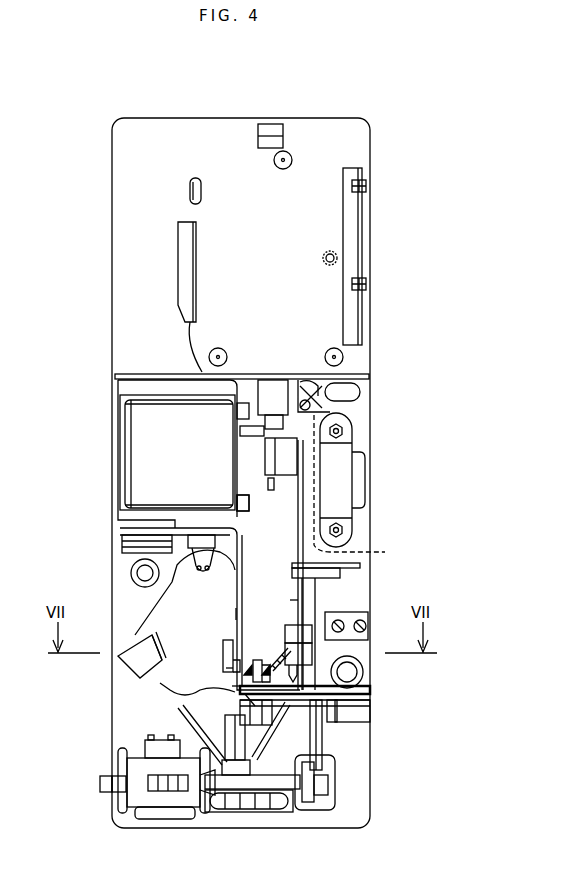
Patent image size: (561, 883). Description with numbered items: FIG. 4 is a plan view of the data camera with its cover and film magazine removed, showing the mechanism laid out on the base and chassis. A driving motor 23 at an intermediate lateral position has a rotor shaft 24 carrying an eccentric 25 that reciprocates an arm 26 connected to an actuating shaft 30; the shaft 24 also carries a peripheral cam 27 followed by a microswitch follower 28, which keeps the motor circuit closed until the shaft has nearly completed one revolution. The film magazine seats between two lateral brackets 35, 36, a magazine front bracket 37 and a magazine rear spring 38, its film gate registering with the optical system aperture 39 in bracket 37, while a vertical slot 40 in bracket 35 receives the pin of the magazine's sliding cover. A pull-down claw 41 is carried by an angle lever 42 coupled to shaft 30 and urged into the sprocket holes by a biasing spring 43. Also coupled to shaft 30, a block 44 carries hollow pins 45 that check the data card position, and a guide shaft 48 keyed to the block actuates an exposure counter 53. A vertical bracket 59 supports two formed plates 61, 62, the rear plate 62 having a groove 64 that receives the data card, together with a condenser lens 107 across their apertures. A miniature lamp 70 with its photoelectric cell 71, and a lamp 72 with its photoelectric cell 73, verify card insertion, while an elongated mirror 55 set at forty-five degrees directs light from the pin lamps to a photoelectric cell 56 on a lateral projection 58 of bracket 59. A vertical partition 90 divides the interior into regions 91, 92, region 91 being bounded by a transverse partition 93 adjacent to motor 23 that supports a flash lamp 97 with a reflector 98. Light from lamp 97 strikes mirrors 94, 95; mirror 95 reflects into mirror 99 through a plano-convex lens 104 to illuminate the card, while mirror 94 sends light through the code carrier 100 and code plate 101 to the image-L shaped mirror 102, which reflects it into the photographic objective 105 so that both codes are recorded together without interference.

The driving motor 23 is at (136, 432).
The rotor shaft 24 is at (262, 458).
The eccentric 25 is at (296, 468).
The reciprocating rod or arm 26 is at (296, 527).
The peripheral cam 27 is at (276, 482).
The microswitch follower 28 is at (268, 492).
The actuating shaft 30 is at (361, 487).
The lateral bracket 35 is at (178, 243).
The lateral bracket 36 is at (350, 228).
The magazine front bracket 37 is at (158, 373).
The magazine rear spring 38 is at (283, 143).
The optical system aperture 39 is at (272, 374).
The vertical slot 40 is at (196, 290).
The pull-down claw 41 is at (365, 390).
The angle lever 42 is at (320, 398).
The biasing spring 43 is at (335, 409).
The block 44 is at (356, 666).
The hollow pins 45 is at (298, 653).
The guide shaft 48 is at (316, 597).
The exposure counter 53 is at (170, 815).
The elongated mirror 55 is at (318, 745).
The photoelectric cell 56 is at (333, 723).
The lateral projection 58 is at (365, 708).
The vertical bracket 59 is at (226, 668).
The formed plate 61 is at (232, 690).
The formed plate 62 is at (305, 691).
The groove 64 is at (256, 712).
The miniature lamp 70 is at (285, 643).
The lamp 72 is at (280, 659).
The photoelectric cell 71 is at (142, 666).
The photoelectric cell 73 is at (142, 655).
The vertical partition 90 is at (236, 612).
The interior region 91 is at (180, 638).
The interior region 92 is at (290, 606).
The vertical partition 93 is at (134, 526).
The reflecting mirror 94 is at (135, 668).
The reflecting mirror 95 is at (180, 713).
The flash lamp 97 is at (196, 568).
The reflector 98 is at (213, 566).
The reflecting mirror 99 is at (271, 734).
The code carrier 100 is at (225, 656).
The code plate 101 is at (250, 662).
The image-L shaped mirror 102 is at (266, 664).
The plano-convex lens 104 is at (232, 746).
The photographic objective 105 is at (247, 437).
The condenser lens 107 is at (256, 703).